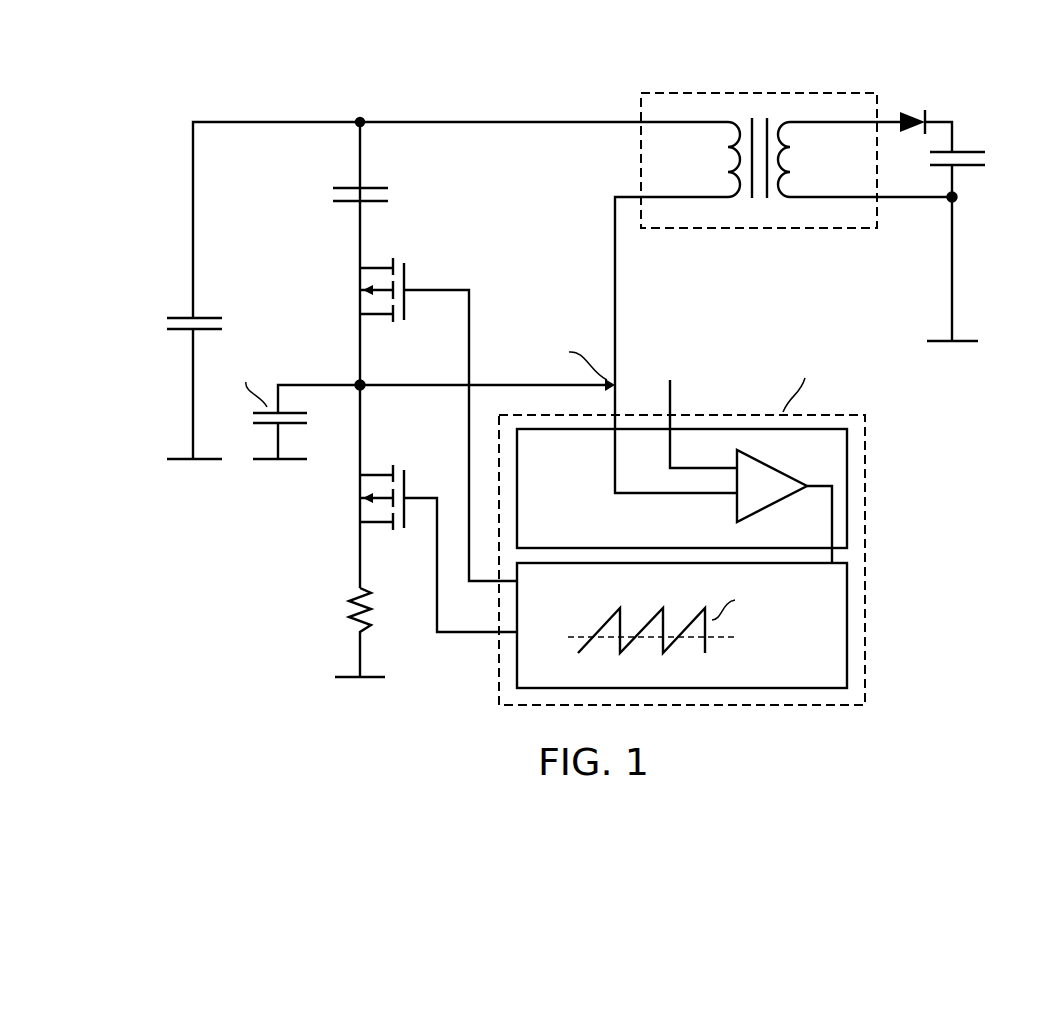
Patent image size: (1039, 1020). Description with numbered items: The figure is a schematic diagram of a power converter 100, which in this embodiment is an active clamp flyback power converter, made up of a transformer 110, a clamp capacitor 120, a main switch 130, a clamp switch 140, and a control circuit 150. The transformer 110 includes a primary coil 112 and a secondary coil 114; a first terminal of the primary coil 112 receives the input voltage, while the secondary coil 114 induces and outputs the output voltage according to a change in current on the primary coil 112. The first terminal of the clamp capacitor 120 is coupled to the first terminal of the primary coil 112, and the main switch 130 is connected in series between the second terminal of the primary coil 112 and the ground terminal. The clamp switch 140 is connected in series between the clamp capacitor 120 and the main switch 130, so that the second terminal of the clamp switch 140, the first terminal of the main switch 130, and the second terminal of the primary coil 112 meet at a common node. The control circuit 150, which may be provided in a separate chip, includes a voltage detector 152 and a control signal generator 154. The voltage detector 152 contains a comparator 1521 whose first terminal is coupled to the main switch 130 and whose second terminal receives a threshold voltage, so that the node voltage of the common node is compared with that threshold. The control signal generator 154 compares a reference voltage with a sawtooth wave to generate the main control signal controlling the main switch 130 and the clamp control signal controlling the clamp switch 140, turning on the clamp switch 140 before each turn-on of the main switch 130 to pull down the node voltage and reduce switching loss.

The power converter 100 is at (124, 181).
The transformer 110 is at (760, 232).
The primary coil 112 is at (722, 166).
The secondary coil 114 is at (800, 152).
The clamp capacitor 120 is at (330, 198).
The main switch 130 is at (354, 515).
The clamp switch 140 is at (358, 282).
The control circuit 150 is at (935, 513).
The voltage detector 152 is at (847, 488).
The comparator 1521 is at (765, 460).
The control signal generator 154 is at (847, 603).